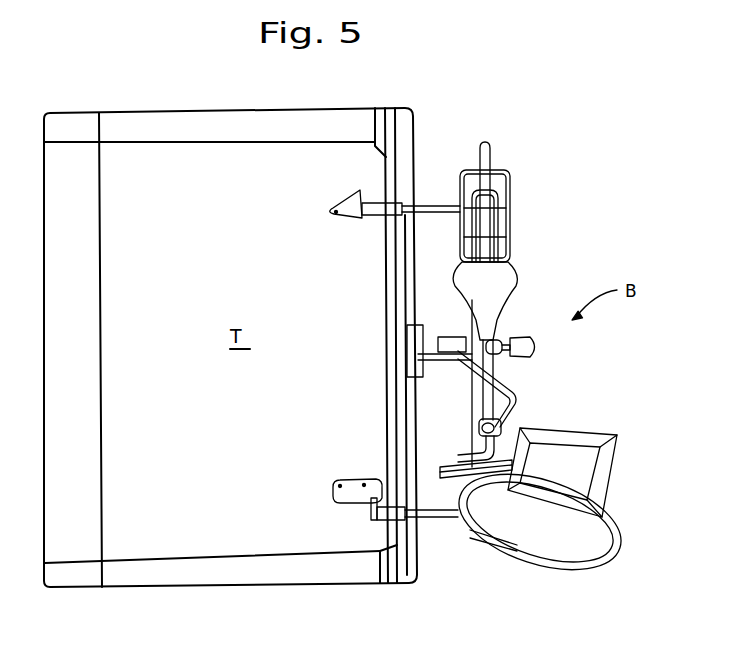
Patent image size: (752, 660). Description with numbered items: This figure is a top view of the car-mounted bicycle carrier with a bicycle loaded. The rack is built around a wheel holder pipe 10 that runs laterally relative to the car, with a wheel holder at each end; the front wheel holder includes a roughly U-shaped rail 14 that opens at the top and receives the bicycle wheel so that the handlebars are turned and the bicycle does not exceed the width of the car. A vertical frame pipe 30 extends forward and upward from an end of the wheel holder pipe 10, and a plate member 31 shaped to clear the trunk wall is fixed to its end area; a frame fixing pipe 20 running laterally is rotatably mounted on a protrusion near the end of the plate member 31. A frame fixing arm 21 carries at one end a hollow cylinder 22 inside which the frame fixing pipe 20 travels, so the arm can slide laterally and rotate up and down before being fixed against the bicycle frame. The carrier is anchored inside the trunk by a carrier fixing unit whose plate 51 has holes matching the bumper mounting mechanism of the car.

The wheel holder pipe 10 is at (472, 447).
The U-shaped rail 14 is at (480, 552).
The frame fixing pipe 20 is at (420, 254).
The frame fixing arm 21 is at (446, 362).
The hollow cylinder 22 is at (418, 333).
The vertical frame pipe 30 is at (440, 206).
The plate member 31 is at (372, 520).
The plate 51 is at (340, 503).